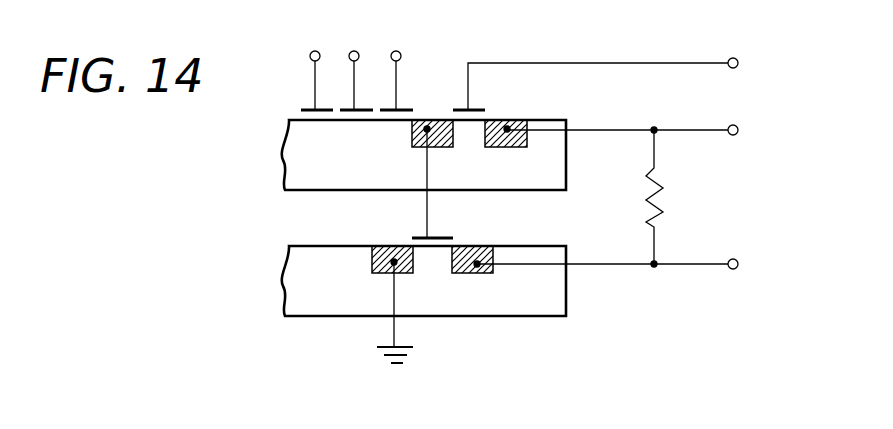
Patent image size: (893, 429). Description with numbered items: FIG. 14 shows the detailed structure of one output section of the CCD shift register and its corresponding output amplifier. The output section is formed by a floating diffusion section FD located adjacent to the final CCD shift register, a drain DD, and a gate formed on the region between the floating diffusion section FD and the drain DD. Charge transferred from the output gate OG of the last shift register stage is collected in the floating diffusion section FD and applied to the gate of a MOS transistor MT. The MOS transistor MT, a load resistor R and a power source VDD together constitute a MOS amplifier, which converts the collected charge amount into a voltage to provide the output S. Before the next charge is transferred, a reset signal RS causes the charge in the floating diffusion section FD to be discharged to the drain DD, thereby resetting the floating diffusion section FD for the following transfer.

The output gate OG is at (398, 66).
The reset signal RS is at (615, 81).
The floating diffusion section FD is at (438, 179).
The drain DD is at (506, 149).
The power source VDD is at (652, 132).
The load resistor R is at (666, 197).
The output S is at (619, 267).
The MOS transistor MT is at (444, 287).